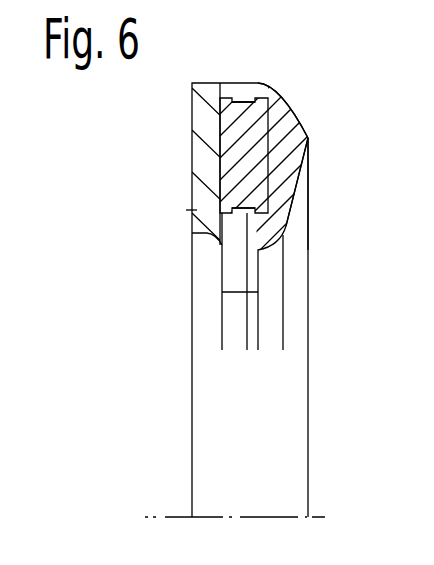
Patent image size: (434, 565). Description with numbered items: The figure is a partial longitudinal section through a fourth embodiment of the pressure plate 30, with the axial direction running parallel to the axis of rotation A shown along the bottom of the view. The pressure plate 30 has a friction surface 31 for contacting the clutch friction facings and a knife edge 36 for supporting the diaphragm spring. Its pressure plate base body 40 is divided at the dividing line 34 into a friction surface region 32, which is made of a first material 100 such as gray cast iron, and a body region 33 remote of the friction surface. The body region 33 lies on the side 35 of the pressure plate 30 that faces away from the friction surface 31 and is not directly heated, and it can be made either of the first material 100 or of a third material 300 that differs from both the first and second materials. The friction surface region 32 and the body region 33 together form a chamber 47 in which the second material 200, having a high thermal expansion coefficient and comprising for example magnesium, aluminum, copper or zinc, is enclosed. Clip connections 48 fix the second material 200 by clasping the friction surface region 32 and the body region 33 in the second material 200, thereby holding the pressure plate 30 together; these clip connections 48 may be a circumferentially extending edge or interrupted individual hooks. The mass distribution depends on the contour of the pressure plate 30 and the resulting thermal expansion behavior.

The pressure plate 30 is at (176, 362).
The friction surface 31 is at (192, 182).
The friction surface region 32 is at (202, 107).
The body region 33 is at (275, 232).
The dividing line 34 is at (239, 101).
The side 35 is at (296, 106).
The knife edge 36 is at (310, 137).
The pressure plate base body 40 is at (232, 335).
The chamber 47 is at (219, 142).
The clip connections 48 is at (250, 95).
The first material 100 is at (285, 185).
The second material 200 is at (237, 207).
The third material 300 is at (288, 218).
The axis of rotation A is at (313, 515).